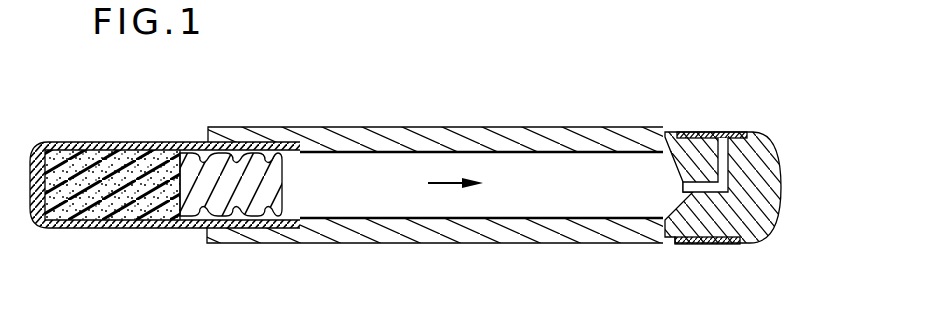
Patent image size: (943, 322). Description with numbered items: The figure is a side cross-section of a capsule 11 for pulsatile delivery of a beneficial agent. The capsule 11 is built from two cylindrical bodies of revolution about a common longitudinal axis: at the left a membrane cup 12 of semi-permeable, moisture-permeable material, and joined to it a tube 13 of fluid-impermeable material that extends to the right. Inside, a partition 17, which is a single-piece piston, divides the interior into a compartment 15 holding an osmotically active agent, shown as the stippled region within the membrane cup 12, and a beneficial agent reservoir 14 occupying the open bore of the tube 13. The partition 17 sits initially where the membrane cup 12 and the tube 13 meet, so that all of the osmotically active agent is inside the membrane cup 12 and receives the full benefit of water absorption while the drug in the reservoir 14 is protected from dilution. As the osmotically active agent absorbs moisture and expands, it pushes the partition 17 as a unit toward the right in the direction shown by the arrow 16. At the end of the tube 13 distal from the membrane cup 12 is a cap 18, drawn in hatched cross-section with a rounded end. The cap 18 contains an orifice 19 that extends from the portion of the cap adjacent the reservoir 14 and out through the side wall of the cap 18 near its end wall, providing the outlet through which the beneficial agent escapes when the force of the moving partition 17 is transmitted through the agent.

The capsule 11 is at (678, 68).
The membrane cup 12 is at (66, 143).
The tube 13 is at (600, 138).
The beneficial agent reservoir 14 is at (532, 193).
The compartment 15 is at (121, 173).
The arrow 16 is at (450, 178).
The partition 17 is at (187, 170).
The cap 18 is at (763, 164).
The orifice 19 is at (693, 188).